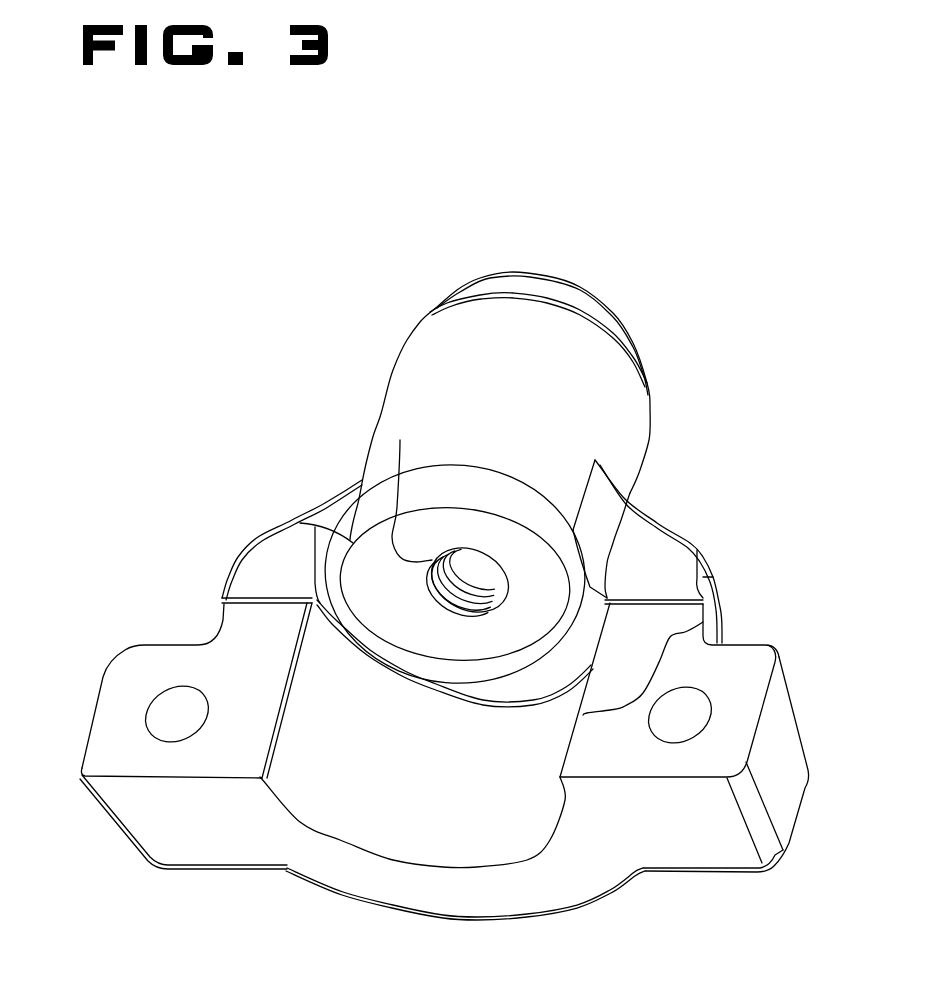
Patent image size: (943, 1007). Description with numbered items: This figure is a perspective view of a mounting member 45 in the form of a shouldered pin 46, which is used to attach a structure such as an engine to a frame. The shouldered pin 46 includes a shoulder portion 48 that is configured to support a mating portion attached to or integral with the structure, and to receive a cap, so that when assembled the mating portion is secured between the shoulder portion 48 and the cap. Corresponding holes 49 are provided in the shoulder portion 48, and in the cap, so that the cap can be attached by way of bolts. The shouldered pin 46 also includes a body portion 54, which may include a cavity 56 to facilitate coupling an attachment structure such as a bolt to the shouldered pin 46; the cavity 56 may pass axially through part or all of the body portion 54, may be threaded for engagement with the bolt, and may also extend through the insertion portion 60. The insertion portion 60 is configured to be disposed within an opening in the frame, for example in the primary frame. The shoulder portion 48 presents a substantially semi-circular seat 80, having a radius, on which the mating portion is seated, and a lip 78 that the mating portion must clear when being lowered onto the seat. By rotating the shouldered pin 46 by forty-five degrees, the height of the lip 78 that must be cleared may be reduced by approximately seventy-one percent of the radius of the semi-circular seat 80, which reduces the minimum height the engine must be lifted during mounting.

The mounting member 45 is at (745, 450).
The shouldered pin 46 is at (212, 372).
The shoulder portion 48 is at (495, 845).
The holes 49 is at (182, 705).
The body portion 54 is at (638, 432).
The cavity 56 is at (397, 507).
The insertion portion 60 is at (489, 270).
The lip 78 is at (703, 622).
The semi-circular seat 80 is at (363, 820).